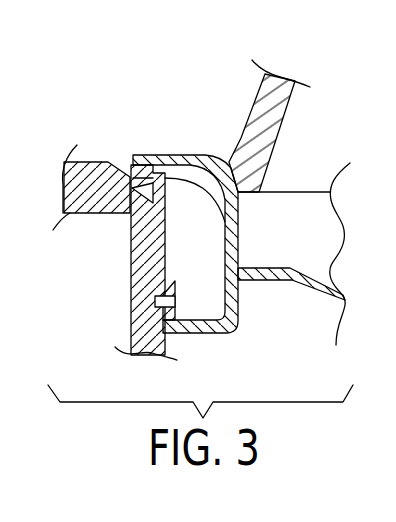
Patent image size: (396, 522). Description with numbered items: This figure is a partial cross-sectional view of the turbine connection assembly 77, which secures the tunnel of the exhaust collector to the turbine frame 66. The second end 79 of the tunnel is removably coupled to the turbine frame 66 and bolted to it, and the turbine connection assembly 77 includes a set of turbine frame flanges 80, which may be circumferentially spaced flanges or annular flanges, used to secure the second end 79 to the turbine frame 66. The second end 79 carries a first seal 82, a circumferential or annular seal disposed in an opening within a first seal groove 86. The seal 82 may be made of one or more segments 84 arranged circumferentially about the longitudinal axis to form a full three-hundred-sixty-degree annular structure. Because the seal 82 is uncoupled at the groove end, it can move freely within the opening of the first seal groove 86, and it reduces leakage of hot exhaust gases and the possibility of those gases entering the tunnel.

The turbine connection assembly 77 is at (98, 72).
The second end of the tunnel 79 is at (95, 162).
The turbine frame 66 is at (165, 155).
The turbine frame flanges 80 is at (241, 224).
The first seal 82 is at (246, 208).
The segments 84 is at (235, 222).
The first seal groove 86 is at (129, 216).